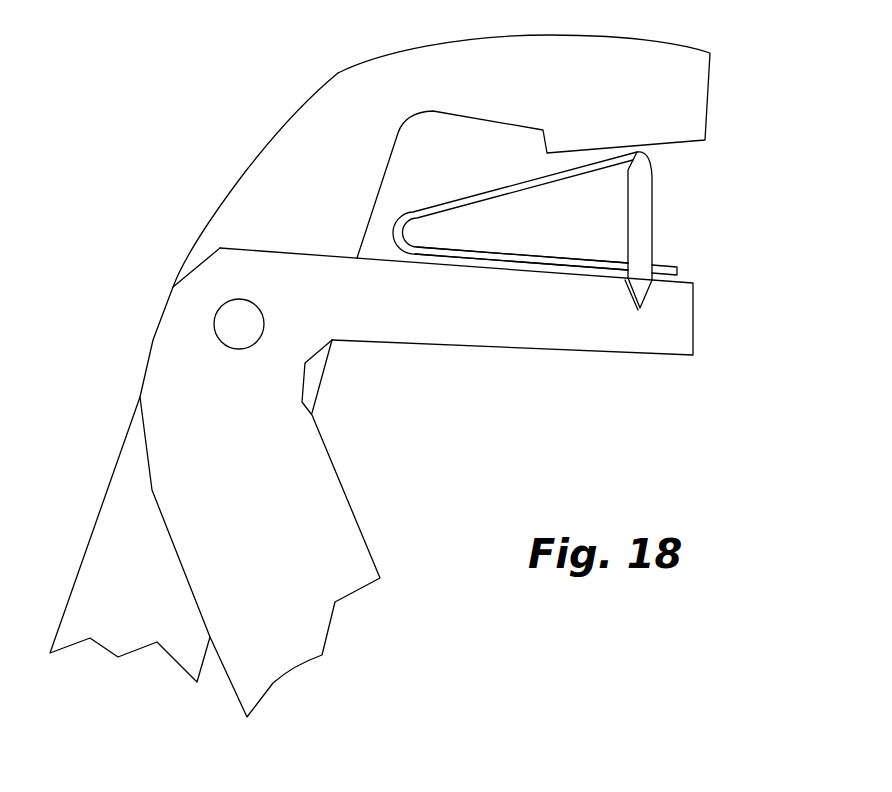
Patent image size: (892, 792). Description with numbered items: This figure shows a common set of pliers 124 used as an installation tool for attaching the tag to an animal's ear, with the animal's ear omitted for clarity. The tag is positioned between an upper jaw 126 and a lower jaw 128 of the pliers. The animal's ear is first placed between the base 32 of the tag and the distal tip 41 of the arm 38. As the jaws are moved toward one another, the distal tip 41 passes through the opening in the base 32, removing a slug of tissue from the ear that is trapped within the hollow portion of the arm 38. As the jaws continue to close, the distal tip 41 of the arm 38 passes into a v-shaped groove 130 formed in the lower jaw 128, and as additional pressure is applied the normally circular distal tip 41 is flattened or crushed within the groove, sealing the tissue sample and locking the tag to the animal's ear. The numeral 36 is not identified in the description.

The pliers 124 is at (233, 132).
The upper jaw 126 is at (653, 97).
The lower jaw 128 is at (682, 331).
The first leg of spring clip 36 is at (492, 192).
The base 32 is at (520, 255).
The arm 38 is at (640, 220).
The distal tip 41 is at (640, 288).
The v-shaped groove 130 is at (640, 306).